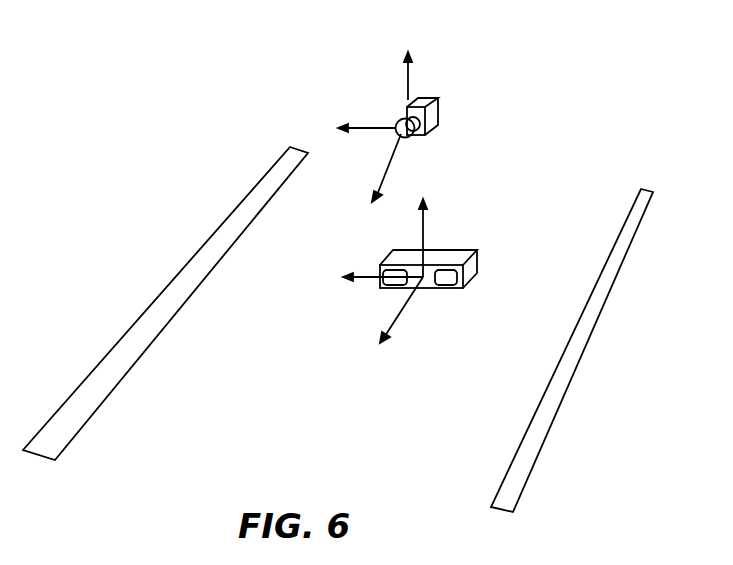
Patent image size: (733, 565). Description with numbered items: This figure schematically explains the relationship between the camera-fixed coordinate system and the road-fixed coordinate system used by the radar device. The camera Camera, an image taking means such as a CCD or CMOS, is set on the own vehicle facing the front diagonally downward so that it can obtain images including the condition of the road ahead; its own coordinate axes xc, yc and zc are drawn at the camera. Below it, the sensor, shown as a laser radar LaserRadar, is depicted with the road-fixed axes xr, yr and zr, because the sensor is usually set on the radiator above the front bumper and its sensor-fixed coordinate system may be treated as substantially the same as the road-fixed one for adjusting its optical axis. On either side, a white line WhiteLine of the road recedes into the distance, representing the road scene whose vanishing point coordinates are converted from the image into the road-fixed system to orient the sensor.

The camera Camera is at (427, 120).
The laser radar LaserRadar is at (473, 268).
The white line WhiteLine is at (607, 292).